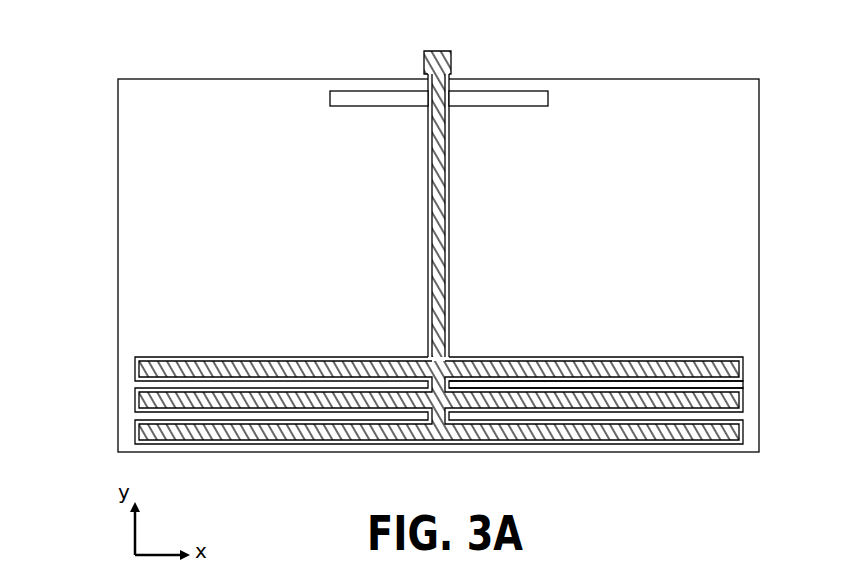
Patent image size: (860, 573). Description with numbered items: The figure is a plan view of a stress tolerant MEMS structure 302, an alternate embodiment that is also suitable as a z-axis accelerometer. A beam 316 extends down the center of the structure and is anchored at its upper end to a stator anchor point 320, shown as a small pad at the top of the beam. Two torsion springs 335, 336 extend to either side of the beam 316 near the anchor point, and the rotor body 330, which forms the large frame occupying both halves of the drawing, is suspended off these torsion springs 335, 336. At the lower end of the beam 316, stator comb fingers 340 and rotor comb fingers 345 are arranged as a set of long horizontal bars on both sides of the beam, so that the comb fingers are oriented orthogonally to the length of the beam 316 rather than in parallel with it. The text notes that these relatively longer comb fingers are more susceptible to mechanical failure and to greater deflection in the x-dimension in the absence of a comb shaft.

The MEMS structure 302 is at (72, 113).
The beam 316 is at (442, 177).
The stator anchor point 320 is at (430, 52).
The rotor body 330 is at (280, 222).
The torsion spring 335 is at (372, 83).
The torsion spring 336 is at (503, 82).
The stator comb fingers 340 is at (735, 371).
The rotor comb fingers 345 is at (732, 384).